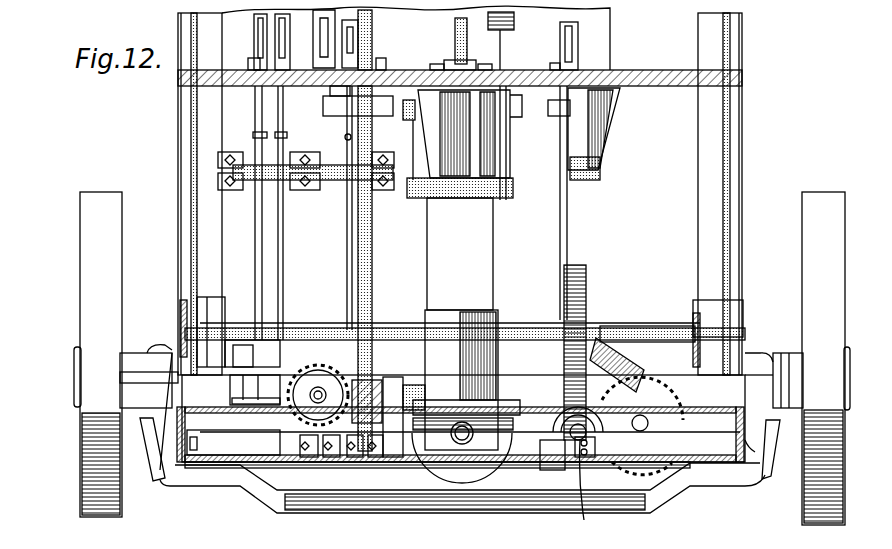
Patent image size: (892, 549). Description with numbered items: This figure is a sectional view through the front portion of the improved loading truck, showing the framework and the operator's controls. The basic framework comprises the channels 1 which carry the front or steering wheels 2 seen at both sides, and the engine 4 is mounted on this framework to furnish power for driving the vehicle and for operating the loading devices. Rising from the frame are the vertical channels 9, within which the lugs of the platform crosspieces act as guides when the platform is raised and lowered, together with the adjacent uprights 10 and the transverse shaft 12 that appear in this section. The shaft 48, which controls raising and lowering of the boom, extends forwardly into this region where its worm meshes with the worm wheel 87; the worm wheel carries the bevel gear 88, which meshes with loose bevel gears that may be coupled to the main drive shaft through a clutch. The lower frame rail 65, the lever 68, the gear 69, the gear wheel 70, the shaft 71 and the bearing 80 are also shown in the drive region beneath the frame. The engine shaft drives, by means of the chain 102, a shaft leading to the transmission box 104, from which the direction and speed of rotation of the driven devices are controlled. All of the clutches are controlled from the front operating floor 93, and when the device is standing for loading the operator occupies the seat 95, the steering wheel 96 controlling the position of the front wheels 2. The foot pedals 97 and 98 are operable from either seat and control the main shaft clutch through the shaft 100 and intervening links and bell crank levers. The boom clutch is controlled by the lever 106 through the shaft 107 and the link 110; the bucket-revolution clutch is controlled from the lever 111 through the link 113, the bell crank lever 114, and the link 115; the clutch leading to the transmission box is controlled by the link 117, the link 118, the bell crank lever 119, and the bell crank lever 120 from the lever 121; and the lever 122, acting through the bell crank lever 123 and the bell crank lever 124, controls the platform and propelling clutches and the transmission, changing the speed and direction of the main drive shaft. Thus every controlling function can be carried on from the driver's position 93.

The channels 1 is at (206, 424).
The front or steering wheels 2 is at (120, 506).
The engine 4 is at (449, 322).
The vertical channels 9 is at (178, 208).
The standards 10 is at (178, 160).
The shaft 12 is at (204, 316).
The shaft 48 is at (646, 414).
The rail 65 is at (462, 488).
The lever 68 is at (587, 490).
The gear 69 is at (642, 426).
The gear wheel 70 is at (588, 284).
The shaft 71 is at (650, 332).
The bearing 80 is at (666, 382).
The worm wheel 87 is at (612, 345).
The bevel gear 88 is at (518, 392).
The front operating floor 93 is at (656, 74).
The seat 95 is at (455, 34).
The steering wheel 96 is at (358, 30).
The foot pedal 97 is at (334, 37).
The foot pedal 98 is at (509, 41).
The shaft 100 is at (407, 382).
The chain 102 is at (347, 278).
The transmission box 104 is at (286, 430).
The lever 106 is at (372, 42).
The shaft 107 is at (358, 160).
The link 110 is at (346, 137).
The lever 111 is at (560, 28).
The link 113 is at (568, 240).
The bell crank lever 114 is at (570, 168).
The link 115 is at (566, 136).
The link 117 is at (262, 405).
The link 118 is at (234, 394).
The bell crank lever 119 is at (243, 345).
The bell crank lever 120 is at (255, 158).
The lever 121 is at (258, 35).
The lever 122 is at (278, 35).
The bell crank lever 123 is at (280, 190).
The bell crank lever 124 is at (310, 368).